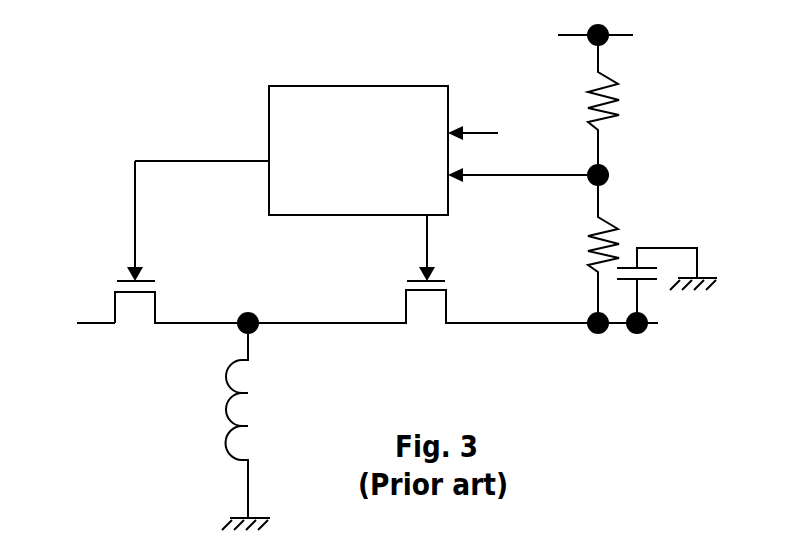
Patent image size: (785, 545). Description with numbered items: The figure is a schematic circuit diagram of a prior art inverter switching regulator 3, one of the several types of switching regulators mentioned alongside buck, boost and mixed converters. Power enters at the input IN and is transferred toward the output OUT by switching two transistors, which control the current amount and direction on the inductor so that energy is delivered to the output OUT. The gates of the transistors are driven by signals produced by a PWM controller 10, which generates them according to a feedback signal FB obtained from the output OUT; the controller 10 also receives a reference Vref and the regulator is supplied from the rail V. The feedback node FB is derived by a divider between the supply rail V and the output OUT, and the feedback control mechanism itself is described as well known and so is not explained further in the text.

The inverter switching regulator 3 is at (171, 106).
The PWM controller 10 is at (373, 193).
The +V supply node V is at (615, 33).
The reference voltage input Vref is at (508, 136).
The feedback signal FB is at (557, 175).
The output OUT is at (666, 325).
The input node IN is at (73, 322).